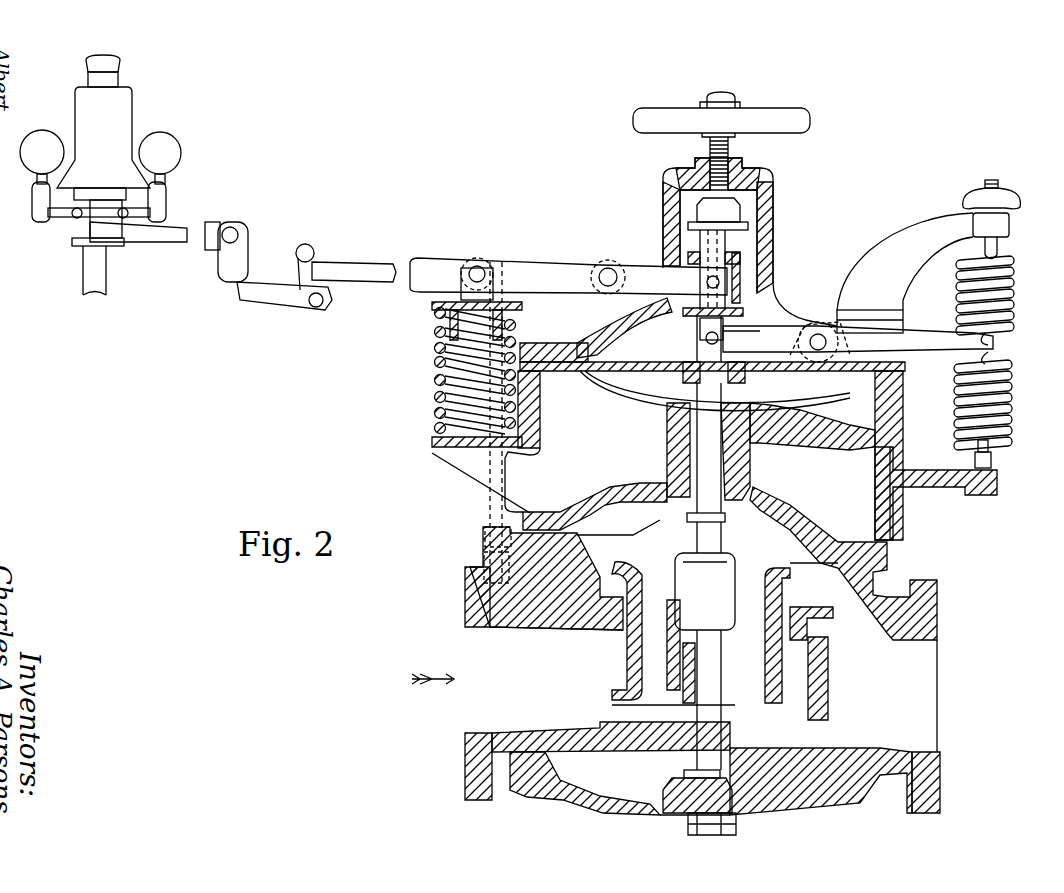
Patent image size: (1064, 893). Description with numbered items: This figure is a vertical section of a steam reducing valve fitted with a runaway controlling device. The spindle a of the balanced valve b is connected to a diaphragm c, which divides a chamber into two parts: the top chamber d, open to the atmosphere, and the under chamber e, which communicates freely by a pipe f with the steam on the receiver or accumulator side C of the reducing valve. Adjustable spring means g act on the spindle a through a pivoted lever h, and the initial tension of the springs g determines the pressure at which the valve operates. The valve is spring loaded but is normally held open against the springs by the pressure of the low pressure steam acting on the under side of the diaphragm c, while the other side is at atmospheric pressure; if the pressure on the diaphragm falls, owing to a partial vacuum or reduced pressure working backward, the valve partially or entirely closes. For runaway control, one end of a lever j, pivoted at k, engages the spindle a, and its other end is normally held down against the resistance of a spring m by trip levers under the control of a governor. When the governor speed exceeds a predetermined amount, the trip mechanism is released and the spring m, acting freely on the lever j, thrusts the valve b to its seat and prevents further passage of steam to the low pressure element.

The lever j is at (540, 266).
The pivot k is at (618, 270).
The spring m is at (442, 372).
The pipe f is at (488, 482).
The top chamber d is at (596, 330).
The receiver or accumulator side C is at (557, 491).
The under chamber e is at (712, 386).
The spindle a is at (710, 462).
The balanced valve b is at (768, 662).
The pivoted lever h is at (938, 352).
The diaphragm c is at (825, 335).
The adjustable spring means g is at (1012, 290).